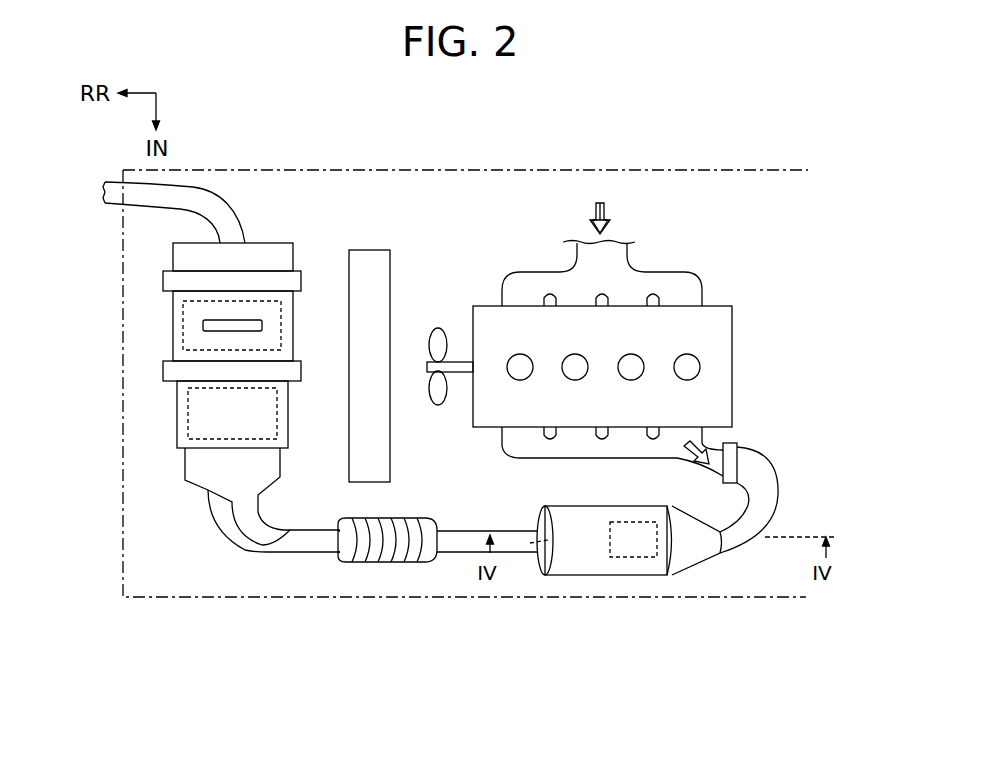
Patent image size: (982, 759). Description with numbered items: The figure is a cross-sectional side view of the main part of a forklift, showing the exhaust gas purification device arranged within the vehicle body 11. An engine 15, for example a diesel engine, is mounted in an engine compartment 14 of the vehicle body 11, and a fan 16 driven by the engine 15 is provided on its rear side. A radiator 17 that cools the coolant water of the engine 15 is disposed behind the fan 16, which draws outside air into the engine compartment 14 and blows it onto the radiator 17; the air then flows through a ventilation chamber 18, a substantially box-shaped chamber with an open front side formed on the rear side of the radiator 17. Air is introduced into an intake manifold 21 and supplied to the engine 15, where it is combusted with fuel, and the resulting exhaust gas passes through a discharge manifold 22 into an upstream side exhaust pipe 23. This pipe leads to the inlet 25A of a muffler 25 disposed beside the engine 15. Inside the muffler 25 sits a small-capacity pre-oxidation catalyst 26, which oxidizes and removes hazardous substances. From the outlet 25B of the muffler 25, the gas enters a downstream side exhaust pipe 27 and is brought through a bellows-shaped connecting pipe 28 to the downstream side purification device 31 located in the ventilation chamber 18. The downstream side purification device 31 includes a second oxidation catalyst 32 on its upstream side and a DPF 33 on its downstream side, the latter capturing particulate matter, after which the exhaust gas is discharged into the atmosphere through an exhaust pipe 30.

The vehicle body 11 is at (688, 170).
The engine compartment 14 is at (497, 276).
The engine 15 is at (710, 328).
The fan 16 is at (437, 333).
The radiator 17 is at (368, 262).
The ventilation chamber 18 is at (323, 243).
The intake manifold 21 is at (635, 278).
The discharge manifold 22 is at (578, 452).
The upstream side exhaust pipe 23 is at (767, 487).
The muffler 25 is at (620, 583).
The inlet of the muffler 25A is at (708, 538).
The outlet of the muffler 25B is at (520, 553).
The pre-oxidation catalyst 26 is at (633, 550).
The downstream side exhaust pipe 27 is at (460, 545).
The connecting pipe 28 is at (398, 562).
The exhaust pipe 30 is at (190, 212).
The downstream side purification device 31 is at (196, 397).
The second oxidation catalyst 32 is at (197, 418).
The DPF 33 is at (197, 337).